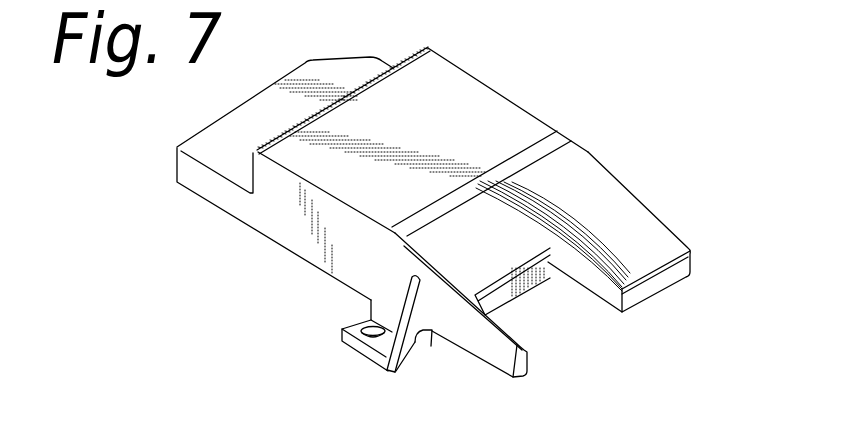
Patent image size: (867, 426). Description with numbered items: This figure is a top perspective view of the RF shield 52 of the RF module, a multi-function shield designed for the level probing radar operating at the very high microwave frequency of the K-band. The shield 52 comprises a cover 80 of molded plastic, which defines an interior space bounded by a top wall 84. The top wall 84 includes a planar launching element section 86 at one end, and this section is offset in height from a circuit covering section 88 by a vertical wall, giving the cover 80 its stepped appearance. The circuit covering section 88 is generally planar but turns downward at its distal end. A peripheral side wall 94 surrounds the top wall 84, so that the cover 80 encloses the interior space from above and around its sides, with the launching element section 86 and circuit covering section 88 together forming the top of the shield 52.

The RF shield 52 is at (650, 149).
The cover 80 is at (551, 114).
The top wall 84 is at (500, 103).
The planar launching element section 86 is at (347, 73).
The circuit covering section 88 is at (443, 77).
The peripheral side wall 94 is at (293, 228).